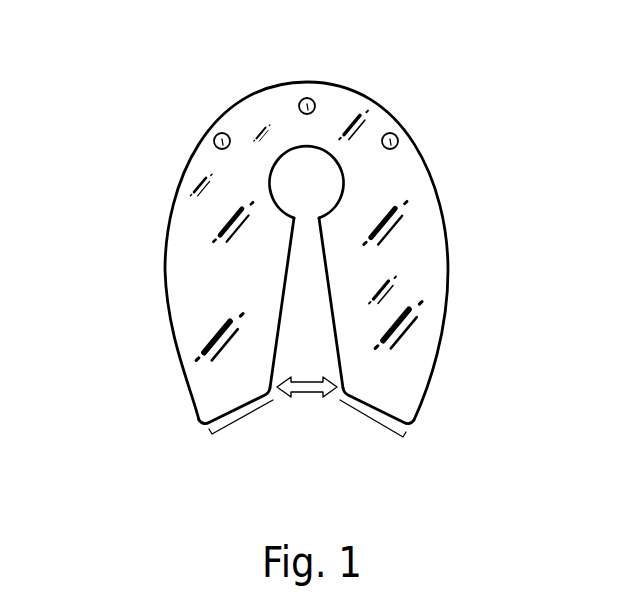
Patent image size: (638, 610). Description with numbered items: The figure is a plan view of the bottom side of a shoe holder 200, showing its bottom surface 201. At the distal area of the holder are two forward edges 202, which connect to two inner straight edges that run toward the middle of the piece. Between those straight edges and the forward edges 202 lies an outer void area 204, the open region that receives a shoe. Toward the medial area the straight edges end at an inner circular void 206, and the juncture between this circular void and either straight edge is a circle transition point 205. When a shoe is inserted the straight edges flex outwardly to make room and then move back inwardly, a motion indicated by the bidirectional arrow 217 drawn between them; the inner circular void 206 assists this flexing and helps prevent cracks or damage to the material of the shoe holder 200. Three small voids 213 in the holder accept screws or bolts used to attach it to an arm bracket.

The shoe holder 200 is at (289, 264).
The bottom surface 201 is at (393, 264).
The forward edges 202 is at (247, 417).
The outer void area 204 is at (287, 315).
The circle transition point 205 is at (293, 217).
The inner circular void 206 is at (313, 184).
The voids 213 is at (219, 134).
The bidirectional arrow 217 is at (310, 392).